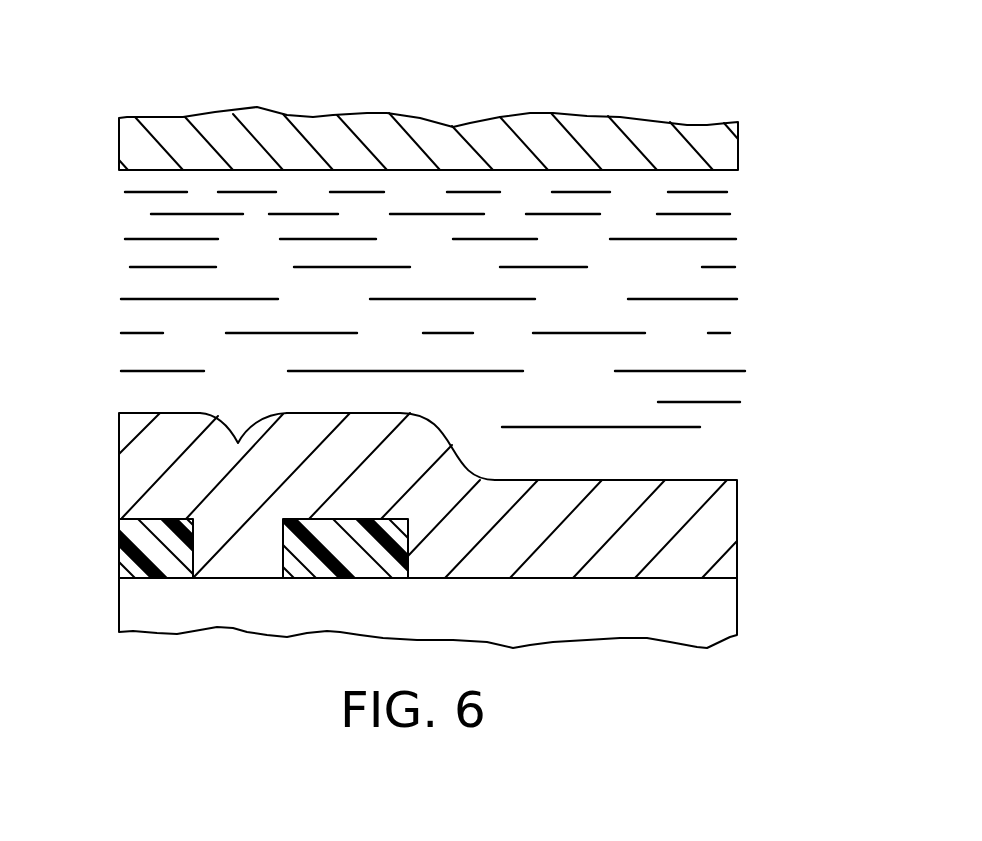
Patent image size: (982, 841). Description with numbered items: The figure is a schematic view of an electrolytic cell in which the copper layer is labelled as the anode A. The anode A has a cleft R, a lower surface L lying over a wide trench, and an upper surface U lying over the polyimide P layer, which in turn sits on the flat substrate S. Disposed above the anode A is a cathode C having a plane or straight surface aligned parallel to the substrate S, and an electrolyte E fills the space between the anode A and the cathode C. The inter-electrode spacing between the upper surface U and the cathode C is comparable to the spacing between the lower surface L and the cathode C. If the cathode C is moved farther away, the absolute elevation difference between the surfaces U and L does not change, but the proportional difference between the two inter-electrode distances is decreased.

The cathode C is at (740, 142).
The electrolyte E is at (749, 319).
The upper surface U is at (130, 398).
The cleft R is at (222, 395).
The lower surface L is at (688, 472).
The anode A is at (737, 527).
The polyimide layer P is at (119, 552).
The substrate S is at (264, 635).